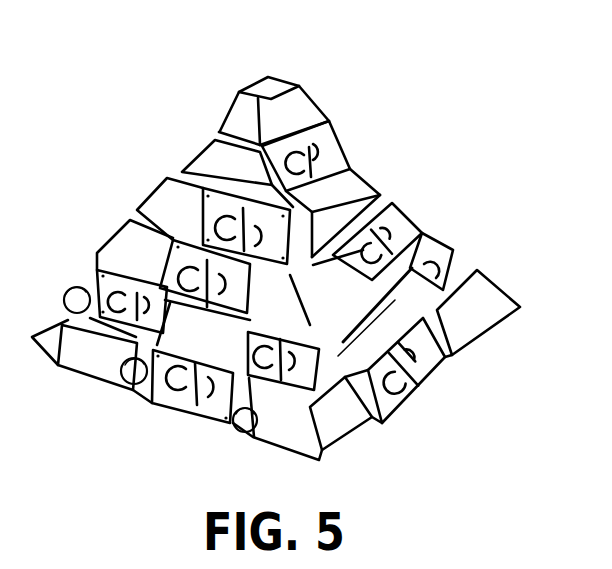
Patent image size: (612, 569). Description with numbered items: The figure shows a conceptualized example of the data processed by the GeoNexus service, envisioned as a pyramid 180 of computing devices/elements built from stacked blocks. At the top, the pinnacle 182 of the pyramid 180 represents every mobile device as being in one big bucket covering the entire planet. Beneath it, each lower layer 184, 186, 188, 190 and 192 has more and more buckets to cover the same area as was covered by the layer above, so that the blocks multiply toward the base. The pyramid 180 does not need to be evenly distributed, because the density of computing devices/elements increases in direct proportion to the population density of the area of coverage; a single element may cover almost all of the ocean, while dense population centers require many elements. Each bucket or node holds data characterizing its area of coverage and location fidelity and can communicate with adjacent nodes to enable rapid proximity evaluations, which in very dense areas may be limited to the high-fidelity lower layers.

The pyramid 180 is at (447, 78).
The pinnacle 182 is at (308, 100).
The lower layer 184 is at (338, 148).
The lower layer 186 is at (376, 190).
The lower layer 188 is at (411, 222).
The lower layer 190 is at (449, 250).
The lower layer 192 is at (499, 283).